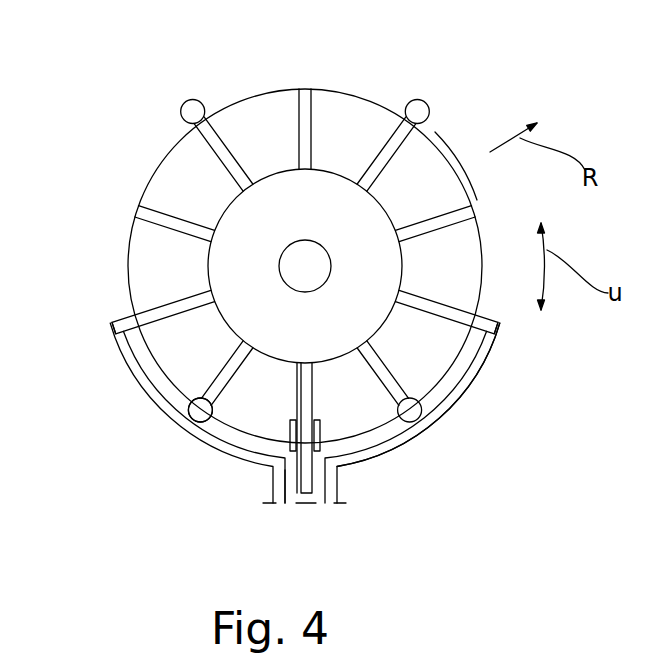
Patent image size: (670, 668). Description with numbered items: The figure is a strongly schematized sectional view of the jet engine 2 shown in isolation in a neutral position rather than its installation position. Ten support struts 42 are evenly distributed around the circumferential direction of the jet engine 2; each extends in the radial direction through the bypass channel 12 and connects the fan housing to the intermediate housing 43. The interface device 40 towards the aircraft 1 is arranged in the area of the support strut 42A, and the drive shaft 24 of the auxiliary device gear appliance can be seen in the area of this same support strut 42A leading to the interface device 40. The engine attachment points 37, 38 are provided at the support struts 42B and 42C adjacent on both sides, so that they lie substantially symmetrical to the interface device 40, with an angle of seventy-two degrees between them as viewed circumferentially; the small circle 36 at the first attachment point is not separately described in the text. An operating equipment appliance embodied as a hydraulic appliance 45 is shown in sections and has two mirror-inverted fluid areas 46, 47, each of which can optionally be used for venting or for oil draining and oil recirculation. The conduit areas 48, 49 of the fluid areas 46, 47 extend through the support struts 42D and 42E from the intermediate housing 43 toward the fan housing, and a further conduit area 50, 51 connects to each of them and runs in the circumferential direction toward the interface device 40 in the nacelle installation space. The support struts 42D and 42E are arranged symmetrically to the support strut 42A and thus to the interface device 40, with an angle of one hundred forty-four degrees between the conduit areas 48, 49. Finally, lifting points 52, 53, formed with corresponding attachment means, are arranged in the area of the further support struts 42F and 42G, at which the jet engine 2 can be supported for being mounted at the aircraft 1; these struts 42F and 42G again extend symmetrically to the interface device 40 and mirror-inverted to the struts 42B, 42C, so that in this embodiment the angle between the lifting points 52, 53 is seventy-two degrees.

The aircraft 1 is at (310, 533).
The jet engine 2 is at (146, 130).
The bypass channel 12 is at (252, 138).
The drive shaft 24 is at (302, 390).
The left pivot roller 36 is at (180, 423).
The engine attachment point 37 is at (200, 413).
The engine attachment point 38 is at (410, 413).
The interface device 40 is at (293, 480).
The support strut 42 is at (470, 225).
The support strut 42A is at (314, 400).
The support strut 42B is at (225, 375).
The support strut 42C is at (382, 373).
The support strut 42D is at (166, 295).
The support strut 42E is at (448, 300).
The support strut 42F is at (213, 137).
The support strut 42G is at (388, 147).
The intermediate housing 43 is at (472, 148).
The hydraulic appliance 45 is at (477, 377).
The fluid area 46 is at (118, 352).
The fluid area 47 is at (490, 350).
The conduit area 48 is at (126, 320).
The conduit area 49 is at (486, 326).
The further conduit area 50 is at (143, 380).
The further conduit area 51 is at (453, 397).
The lifting point 52 is at (190, 108).
The lifting point 53 is at (418, 110).